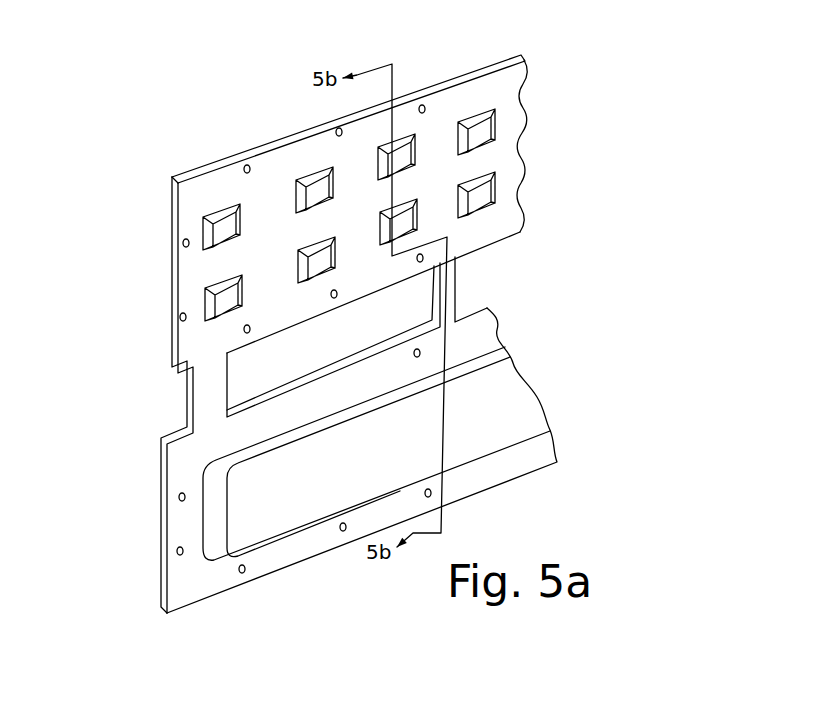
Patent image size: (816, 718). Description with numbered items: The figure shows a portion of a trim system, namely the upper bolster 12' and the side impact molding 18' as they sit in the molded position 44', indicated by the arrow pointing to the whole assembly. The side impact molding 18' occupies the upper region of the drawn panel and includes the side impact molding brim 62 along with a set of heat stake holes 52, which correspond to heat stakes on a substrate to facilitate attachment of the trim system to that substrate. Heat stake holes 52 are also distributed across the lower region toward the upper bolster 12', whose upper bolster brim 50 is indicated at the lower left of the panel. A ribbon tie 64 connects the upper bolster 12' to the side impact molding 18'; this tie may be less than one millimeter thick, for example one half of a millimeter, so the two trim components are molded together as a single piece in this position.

The upper bolster brim 50 is at (187, 587).
The heat stake holes 52 is at (244, 167).
The side impact molding brim 62 is at (277, 157).
The ribbon tie 64 is at (447, 292).
The side impact molding 18' is at (406, 143).
The upper bolster 12' is at (415, 460).
The molded position 44' is at (424, 366).